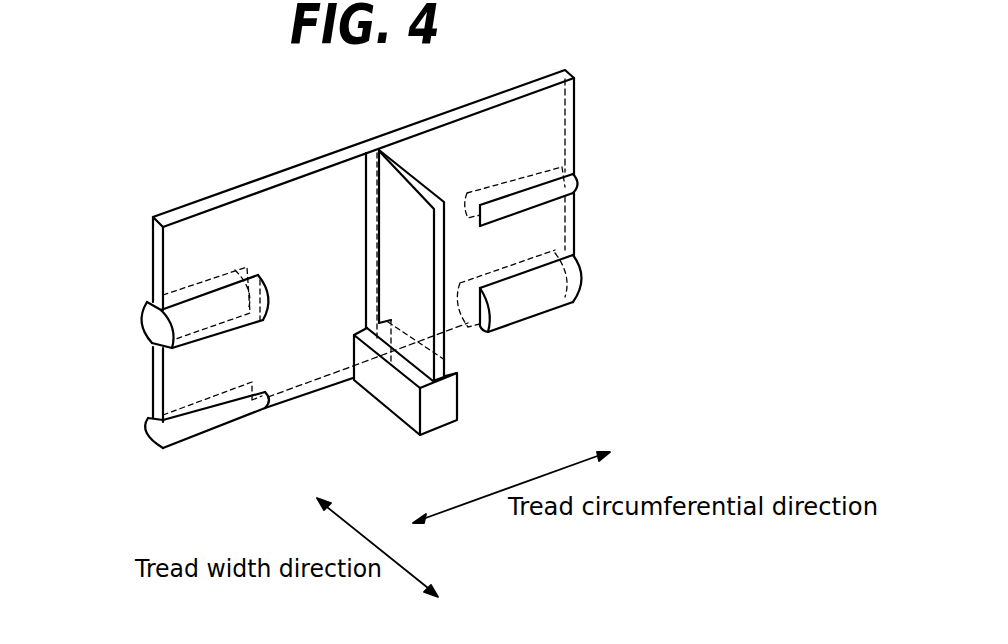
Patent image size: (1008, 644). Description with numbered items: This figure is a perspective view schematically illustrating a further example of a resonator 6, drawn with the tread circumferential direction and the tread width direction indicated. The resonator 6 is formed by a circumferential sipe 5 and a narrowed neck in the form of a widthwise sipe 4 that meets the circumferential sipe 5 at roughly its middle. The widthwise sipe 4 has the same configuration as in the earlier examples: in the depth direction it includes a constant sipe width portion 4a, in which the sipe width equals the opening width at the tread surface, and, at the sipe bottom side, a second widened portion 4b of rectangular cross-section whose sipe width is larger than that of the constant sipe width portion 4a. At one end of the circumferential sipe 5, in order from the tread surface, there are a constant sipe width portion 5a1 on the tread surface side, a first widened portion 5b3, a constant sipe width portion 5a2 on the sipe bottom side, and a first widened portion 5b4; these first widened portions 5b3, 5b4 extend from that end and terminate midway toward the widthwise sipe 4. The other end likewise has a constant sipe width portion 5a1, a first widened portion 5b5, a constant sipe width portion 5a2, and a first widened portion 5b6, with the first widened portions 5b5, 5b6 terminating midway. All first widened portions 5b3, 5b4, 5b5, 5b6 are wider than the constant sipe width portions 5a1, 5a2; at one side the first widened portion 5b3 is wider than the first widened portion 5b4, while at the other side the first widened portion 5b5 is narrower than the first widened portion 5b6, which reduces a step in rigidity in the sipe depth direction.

The narrowed neck (widthwise sipe) 4 is at (457, 292).
The constant sipe width portion 4a is at (441, 325).
The second widened portion 4b is at (527, 350).
The circumferential sipe 5 is at (422, 127).
The constant sipe width portion 5a1 is at (157, 260).
The constant sipe width portion 5a2 is at (158, 385).
The first widened portion 5b3 is at (158, 328).
The first widened portion 5b4 is at (158, 437).
The first widened portion 5b5 is at (578, 183).
The first widened portion 5b6 is at (568, 276).
The resonator 6 is at (231, 146).